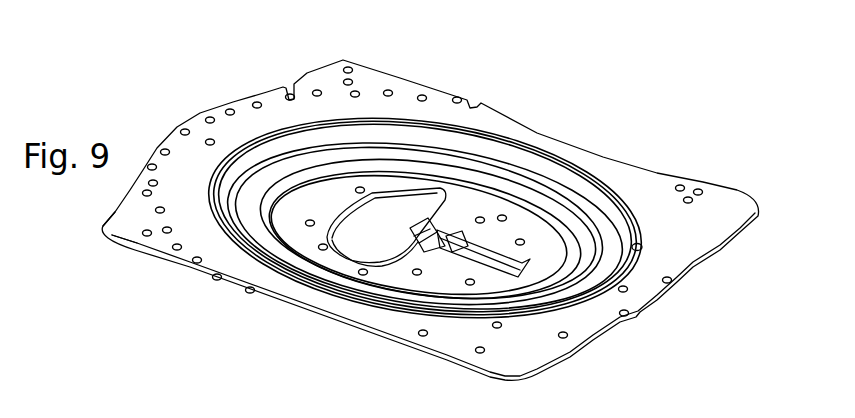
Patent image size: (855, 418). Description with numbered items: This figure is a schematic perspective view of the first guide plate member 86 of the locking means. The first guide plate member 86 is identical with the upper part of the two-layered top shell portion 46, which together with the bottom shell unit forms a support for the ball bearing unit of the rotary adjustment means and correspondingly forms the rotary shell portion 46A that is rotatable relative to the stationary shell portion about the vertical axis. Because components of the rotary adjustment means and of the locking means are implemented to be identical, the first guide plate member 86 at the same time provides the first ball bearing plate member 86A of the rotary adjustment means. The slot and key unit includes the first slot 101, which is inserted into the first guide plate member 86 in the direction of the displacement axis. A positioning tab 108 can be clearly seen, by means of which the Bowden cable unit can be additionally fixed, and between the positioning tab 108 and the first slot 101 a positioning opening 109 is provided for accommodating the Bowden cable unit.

The two-layered top shell portion 46 is at (407, 88).
The rotary shell portion 46A is at (632, 67).
The first guide plate member 86 is at (652, 190).
The first ball bearing plate member 86A is at (134, 248).
The positioning tab 108 is at (422, 232).
The positioning opening 109 is at (457, 253).
The first slot 101 is at (527, 262).